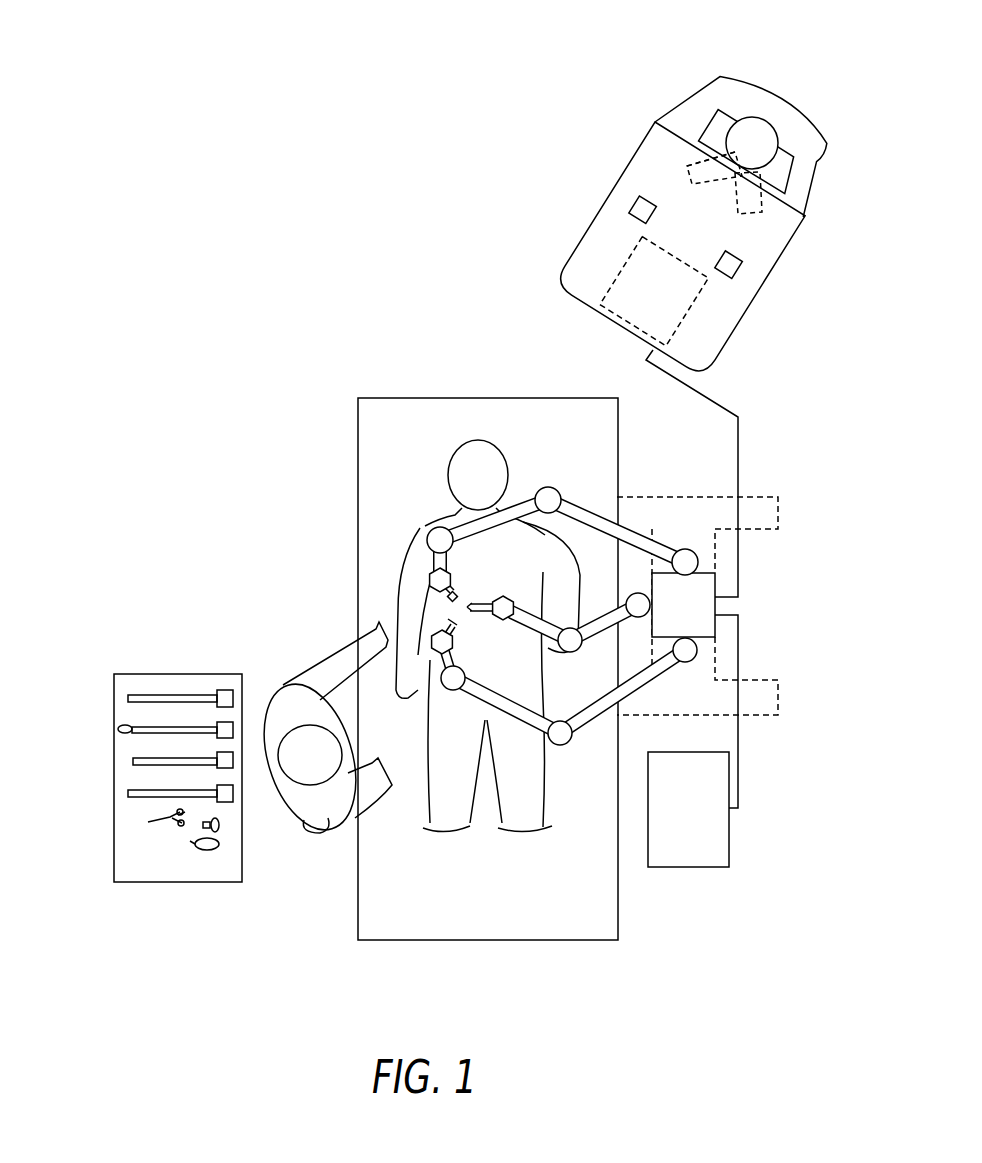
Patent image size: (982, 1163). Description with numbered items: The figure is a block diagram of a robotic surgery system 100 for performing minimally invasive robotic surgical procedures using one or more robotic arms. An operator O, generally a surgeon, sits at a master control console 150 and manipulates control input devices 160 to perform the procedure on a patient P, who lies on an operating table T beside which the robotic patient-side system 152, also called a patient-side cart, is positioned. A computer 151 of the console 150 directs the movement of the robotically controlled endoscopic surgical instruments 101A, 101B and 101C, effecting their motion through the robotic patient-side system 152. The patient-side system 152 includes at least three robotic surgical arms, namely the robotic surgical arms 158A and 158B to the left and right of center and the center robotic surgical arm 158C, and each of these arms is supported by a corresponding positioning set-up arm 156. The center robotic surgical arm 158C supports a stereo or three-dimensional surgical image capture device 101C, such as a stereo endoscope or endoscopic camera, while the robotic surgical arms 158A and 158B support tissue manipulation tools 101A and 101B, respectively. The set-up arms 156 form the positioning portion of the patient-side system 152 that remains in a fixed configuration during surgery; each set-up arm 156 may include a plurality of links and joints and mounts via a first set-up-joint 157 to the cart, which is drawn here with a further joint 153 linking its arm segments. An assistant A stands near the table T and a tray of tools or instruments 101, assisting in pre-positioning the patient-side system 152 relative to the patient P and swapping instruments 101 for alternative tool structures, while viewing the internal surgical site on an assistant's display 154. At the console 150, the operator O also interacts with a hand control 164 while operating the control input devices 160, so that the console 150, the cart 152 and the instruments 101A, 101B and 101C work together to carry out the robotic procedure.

The robotic surgery system 100 is at (230, 372).
The tools or instruments 101 is at (162, 727).
The tissue manipulation tool 101A is at (447, 596).
The tissue manipulation tool 101B is at (443, 617).
The stereo surgical image capture device 101C is at (476, 604).
The master control console 150 is at (773, 243).
The computer 151 is at (668, 301).
The robotic patient-side system 152 is at (762, 567).
The robotic arm 153 is at (591, 727).
The assistant's display 154 is at (688, 868).
The positioning set-up arm 156 is at (622, 520).
The first set-up-joint 157 is at (698, 650).
The robotic surgical arm 158A is at (438, 575).
The robotic surgical arm 158B is at (445, 647).
The center robotic surgical arm 158C is at (498, 615).
The control input devices 160 is at (636, 204).
The hand controller 164 is at (697, 163).
The operator O is at (708, 81).
The patient P is at (447, 476).
The assistant A is at (297, 802).
The operating table T is at (490, 941).